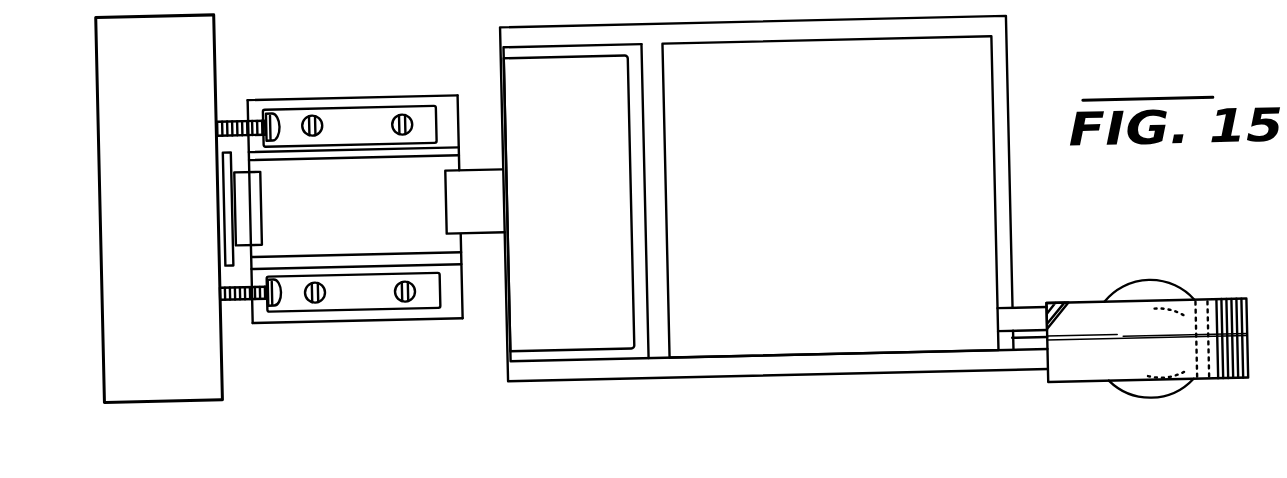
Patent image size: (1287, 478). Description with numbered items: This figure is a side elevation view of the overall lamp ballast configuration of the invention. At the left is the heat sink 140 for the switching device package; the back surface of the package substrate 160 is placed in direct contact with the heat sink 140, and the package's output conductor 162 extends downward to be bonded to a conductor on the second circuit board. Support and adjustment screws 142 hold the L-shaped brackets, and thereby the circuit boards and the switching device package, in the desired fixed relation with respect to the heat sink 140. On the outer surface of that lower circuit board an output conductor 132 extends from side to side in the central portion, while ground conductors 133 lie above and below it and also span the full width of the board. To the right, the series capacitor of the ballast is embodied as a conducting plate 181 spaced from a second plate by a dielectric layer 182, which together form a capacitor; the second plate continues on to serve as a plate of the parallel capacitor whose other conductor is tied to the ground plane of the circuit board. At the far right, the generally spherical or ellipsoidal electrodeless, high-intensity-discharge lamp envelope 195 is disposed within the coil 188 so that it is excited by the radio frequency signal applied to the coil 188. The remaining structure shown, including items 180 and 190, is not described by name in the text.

The output conductor 132 is at (413, 221).
The ground conductor 133 is at (444, 122).
The heat sink 140 is at (183, 216).
The support and adjustment screws 142 is at (244, 109).
The substrate 160 is at (231, 252).
The output conductor of the package 162 is at (247, 196).
The housing 180 is at (589, 44).
The conducting plate 181 is at (598, 222).
The dielectric layer 182 is at (634, 92).
The coil 188 is at (1216, 313).
The cover plate 190 is at (968, 80).
The lamp envelope 195 is at (1145, 291).